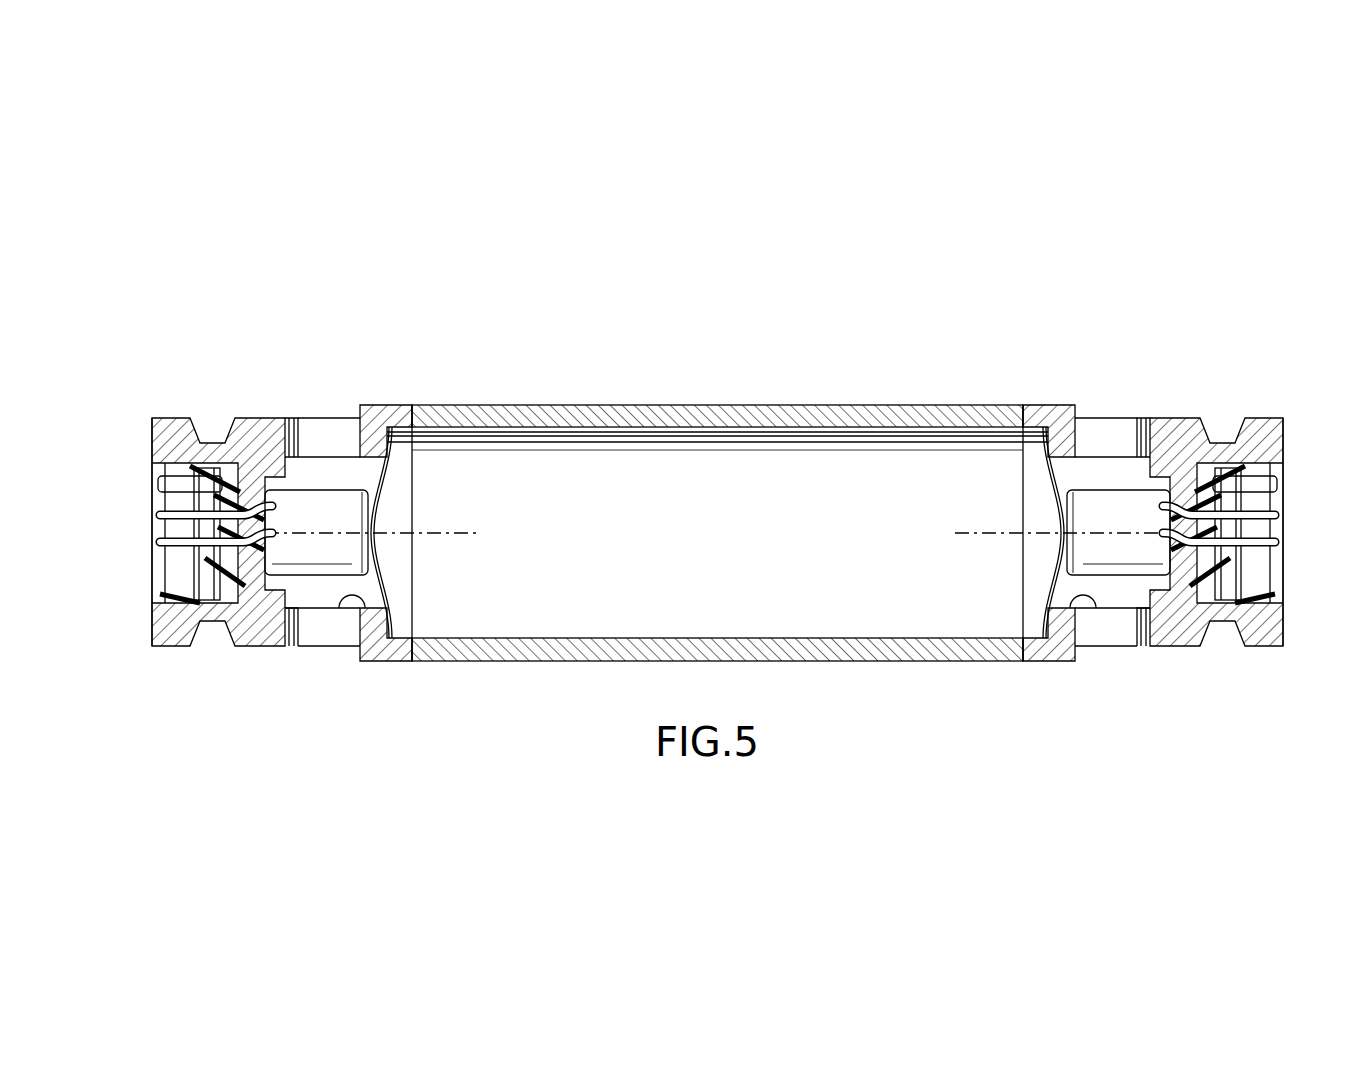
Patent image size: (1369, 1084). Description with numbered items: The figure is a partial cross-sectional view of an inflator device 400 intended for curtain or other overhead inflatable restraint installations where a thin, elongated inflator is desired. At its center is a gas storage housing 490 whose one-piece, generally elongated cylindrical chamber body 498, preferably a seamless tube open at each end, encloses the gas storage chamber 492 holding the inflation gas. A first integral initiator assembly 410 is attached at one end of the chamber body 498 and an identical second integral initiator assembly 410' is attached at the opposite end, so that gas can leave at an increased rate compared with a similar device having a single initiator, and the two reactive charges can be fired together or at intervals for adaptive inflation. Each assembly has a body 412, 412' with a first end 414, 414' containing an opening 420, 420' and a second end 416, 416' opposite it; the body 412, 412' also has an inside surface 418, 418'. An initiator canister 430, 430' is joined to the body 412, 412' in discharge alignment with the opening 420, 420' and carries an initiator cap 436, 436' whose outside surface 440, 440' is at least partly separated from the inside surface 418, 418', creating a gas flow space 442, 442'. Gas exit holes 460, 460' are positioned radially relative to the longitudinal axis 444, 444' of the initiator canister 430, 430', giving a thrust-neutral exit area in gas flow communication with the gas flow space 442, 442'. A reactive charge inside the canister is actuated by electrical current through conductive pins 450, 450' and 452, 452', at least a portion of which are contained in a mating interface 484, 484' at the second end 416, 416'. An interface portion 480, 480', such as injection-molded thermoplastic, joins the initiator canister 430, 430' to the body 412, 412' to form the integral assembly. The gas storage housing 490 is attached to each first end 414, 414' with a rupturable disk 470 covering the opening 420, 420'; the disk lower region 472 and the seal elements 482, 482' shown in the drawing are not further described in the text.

The inflator device 400 is at (717, 477).
The first integral initiator assembly 410 is at (264, 493).
The second integral initiator assembly 410' is at (1183, 498).
The body 412 is at (218, 506).
The body 412' is at (1216, 505).
The first end 414 is at (423, 551).
The first end 414' is at (1049, 533).
The second end 416 is at (117, 532).
The second end 416' is at (1321, 532).
The inside surface 418 is at (341, 643).
The inside surface 418' is at (1095, 654).
The opening 420 is at (459, 533).
The opening 420' is at (967, 533).
The initiator canister 430 is at (309, 633).
The initiator canister 430' is at (1147, 653).
The initiator cap 436 is at (427, 498).
The initiator cap 436' is at (1030, 498).
The outside surface 440 is at (316, 471).
The outside surface 440' is at (1118, 455).
The gas flow space 442 is at (373, 515).
The gas flow space 442' is at (1125, 579).
The longitudinal axis 444 is at (416, 508).
The longitudinal axis 444' is at (1019, 508).
The conductive pin 450 is at (178, 549).
The conductive pin 450' is at (1260, 516).
The conductive pin 452 is at (178, 516).
The conductive pin 452' is at (1260, 549).
The gas exit holes 460 is at (317, 484).
The gas exit holes 460' is at (1111, 483).
The rupturable disk 470 is at (387, 475).
The diaphragm lower portion 472 is at (395, 623).
The interface portion 480 is at (157, 534).
The interface portion 480' is at (1284, 534).
The seal 482 is at (153, 499).
The seal 482' is at (1223, 534).
The mating interface 484 is at (137, 533).
The mating interface 484' is at (1291, 533).
The gas storage housing 490 is at (900, 405).
The gas storage chamber 492 is at (680, 430).
The chamber body 498 is at (777, 430).